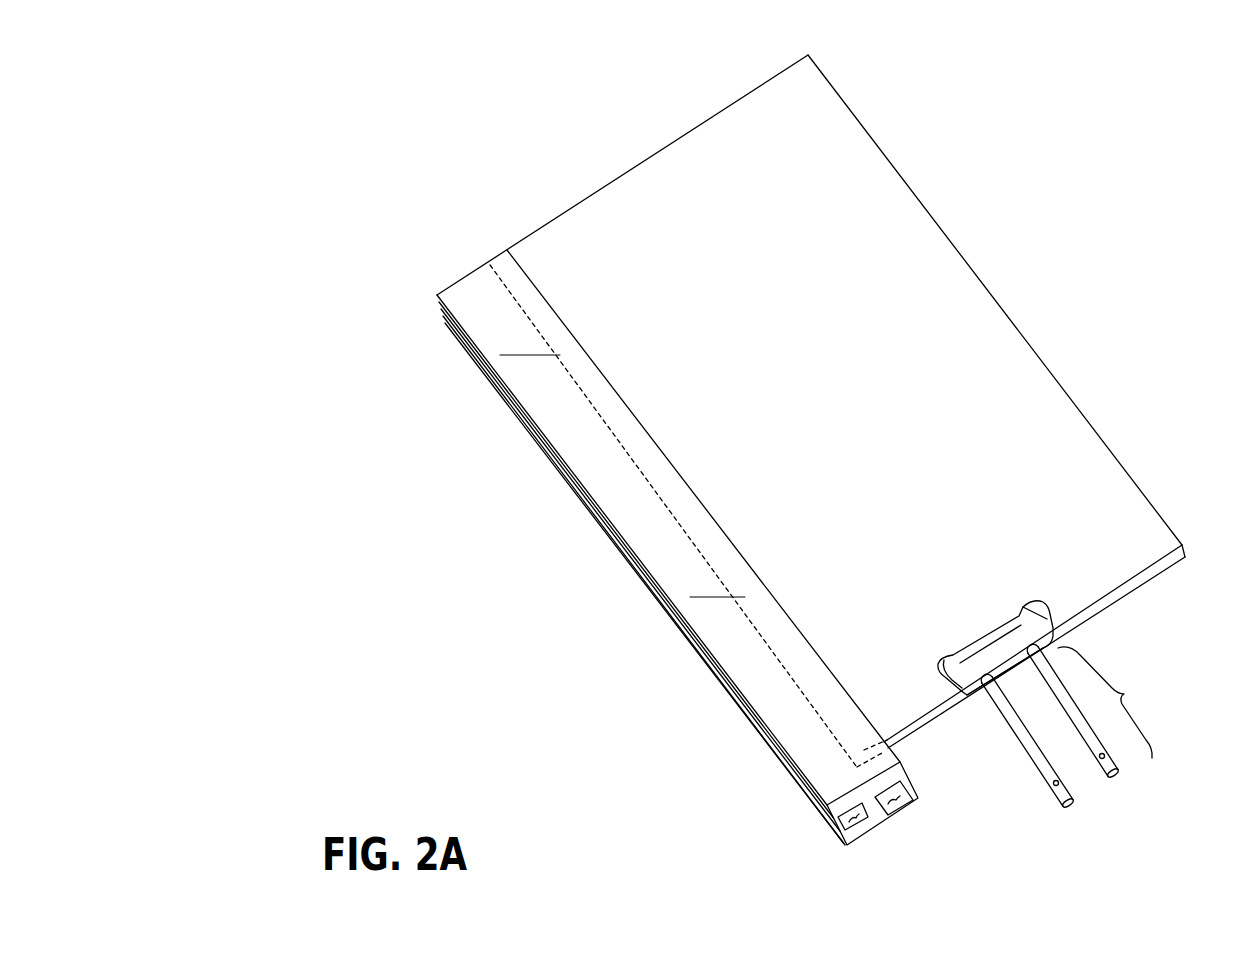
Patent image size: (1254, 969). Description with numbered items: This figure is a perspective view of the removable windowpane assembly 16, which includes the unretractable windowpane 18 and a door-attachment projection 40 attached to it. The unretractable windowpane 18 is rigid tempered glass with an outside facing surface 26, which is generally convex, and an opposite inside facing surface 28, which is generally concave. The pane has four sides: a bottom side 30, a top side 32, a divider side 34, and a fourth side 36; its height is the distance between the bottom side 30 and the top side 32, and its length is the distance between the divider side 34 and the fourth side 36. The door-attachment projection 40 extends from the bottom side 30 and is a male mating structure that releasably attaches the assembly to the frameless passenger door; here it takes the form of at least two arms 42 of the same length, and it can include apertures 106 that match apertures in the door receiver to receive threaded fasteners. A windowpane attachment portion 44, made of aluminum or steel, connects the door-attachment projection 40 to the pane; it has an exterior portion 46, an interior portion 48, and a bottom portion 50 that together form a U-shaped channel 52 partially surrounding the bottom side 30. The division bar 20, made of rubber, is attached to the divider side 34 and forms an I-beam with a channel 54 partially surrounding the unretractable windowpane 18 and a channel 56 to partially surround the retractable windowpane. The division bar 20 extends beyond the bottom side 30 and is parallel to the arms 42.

The removable windowpane assembly 16 is at (408, 183).
The unretractable windowpane 18 is at (849, 93).
The division bar 20 is at (515, 412).
The outside facing surface 26 is at (895, 338).
The inside facing surface 28 is at (1048, 427).
The bottom side 30 is at (1128, 587).
The top side 32 is at (600, 186).
The divider side 34 is at (690, 540).
The fourth side 36 is at (947, 232).
The door-attachment projection 40 is at (1067, 725).
The arms 42 is at (1072, 805).
The windowpane attachment portion 44 is at (1030, 605).
The exterior portion 46 is at (990, 640).
The interior portion 48 is at (985, 690).
The bottom portion 50 is at (945, 695).
The channel 52 is at (1052, 633).
The channel 54 is at (890, 795).
The channel 56 is at (832, 828).
The apertures 106 is at (1100, 755).